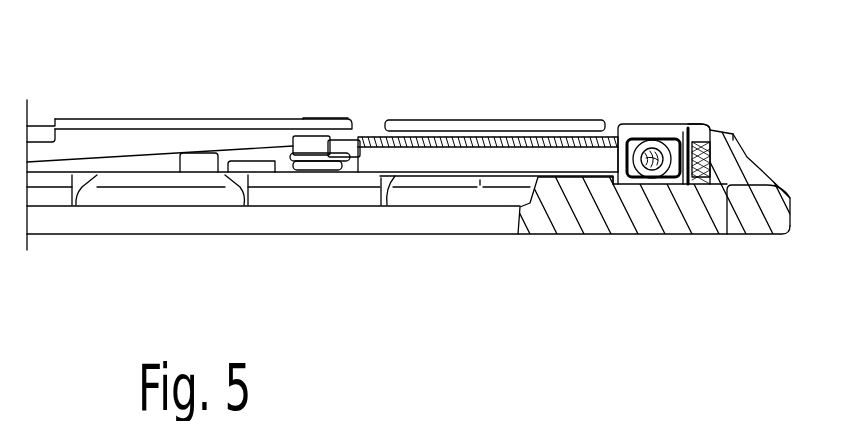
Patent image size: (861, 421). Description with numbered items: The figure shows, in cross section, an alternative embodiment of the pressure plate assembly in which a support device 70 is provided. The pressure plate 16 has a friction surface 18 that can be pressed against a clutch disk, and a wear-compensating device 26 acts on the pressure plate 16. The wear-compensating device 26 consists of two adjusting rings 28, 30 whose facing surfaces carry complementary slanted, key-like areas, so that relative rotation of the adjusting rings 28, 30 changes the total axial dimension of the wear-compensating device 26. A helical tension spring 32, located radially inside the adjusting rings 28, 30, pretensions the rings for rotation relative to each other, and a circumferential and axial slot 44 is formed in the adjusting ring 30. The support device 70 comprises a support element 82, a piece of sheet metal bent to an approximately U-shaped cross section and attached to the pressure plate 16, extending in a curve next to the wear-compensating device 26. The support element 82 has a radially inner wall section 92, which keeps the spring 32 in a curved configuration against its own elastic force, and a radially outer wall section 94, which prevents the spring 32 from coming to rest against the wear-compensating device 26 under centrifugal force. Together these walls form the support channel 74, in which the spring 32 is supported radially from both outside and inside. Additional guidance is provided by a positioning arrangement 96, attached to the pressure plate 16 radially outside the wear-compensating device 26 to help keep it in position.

The pressure plate 16 is at (580, 203).
The friction surface 18 is at (659, 228).
The wear-compensating device 26 is at (727, 118).
The adjusting ring 28 is at (722, 230).
The adjusting ring 30 is at (733, 136).
The helical tension spring 32 is at (522, 137).
The circumferential and axial slot 44 is at (352, 125).
The support device 70 is at (611, 113).
The support channel 74 is at (660, 147).
The support element 82 is at (615, 200).
The radially inner wall section 92 is at (410, 162).
The radially outer wall section 94 is at (687, 140).
The positioning arrangement 96 is at (740, 158).